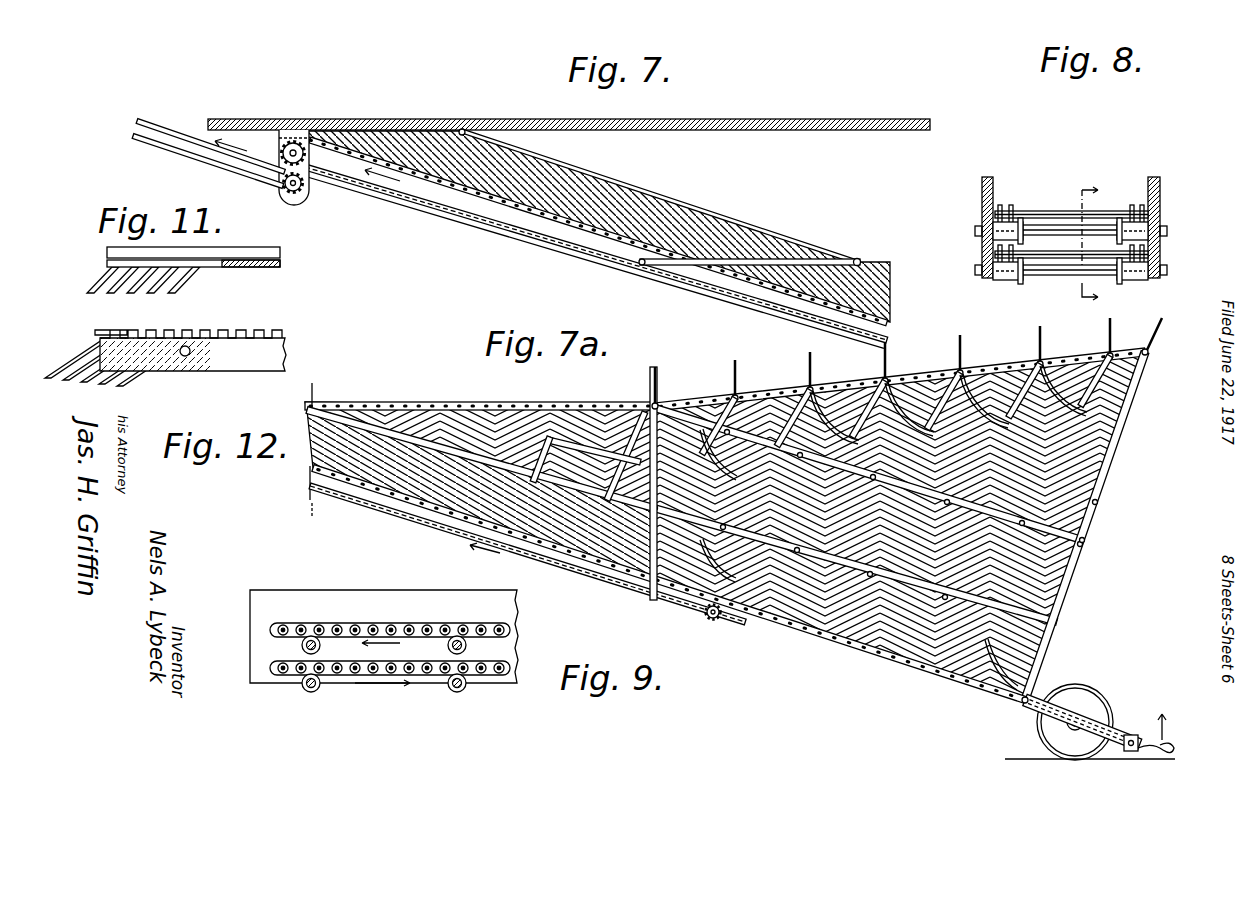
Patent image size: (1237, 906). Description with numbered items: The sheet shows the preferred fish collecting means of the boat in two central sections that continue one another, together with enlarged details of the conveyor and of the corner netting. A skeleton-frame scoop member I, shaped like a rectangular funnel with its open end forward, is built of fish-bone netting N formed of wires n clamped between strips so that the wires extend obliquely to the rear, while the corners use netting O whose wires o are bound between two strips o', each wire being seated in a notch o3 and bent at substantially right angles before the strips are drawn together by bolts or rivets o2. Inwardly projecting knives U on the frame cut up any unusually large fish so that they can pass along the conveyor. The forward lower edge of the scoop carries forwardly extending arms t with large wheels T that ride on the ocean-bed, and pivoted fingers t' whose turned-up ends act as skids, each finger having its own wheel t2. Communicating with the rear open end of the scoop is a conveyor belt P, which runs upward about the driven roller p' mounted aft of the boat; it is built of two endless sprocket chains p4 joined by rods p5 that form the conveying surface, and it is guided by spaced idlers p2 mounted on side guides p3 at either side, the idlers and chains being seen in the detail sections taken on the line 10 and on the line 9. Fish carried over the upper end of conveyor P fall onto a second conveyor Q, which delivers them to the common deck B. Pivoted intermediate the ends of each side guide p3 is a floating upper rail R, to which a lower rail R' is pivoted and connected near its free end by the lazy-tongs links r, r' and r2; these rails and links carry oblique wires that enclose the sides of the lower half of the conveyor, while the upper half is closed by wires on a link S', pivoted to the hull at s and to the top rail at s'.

In FIG. 7, the common deck B is at (760, 124).
In FIG. 7, the second conveyor Q is at (145, 143).
In FIG. 7, the directional roller p' is at (294, 143).
In FIG. 7, the pivot of link S to hull s is at (658, 175).
In FIG. 7, the pivot of link S to top rail s' is at (877, 249).
In FIG. 7, the link S' is at (595, 226).
In FIG. 7, the side guides p3 is at (505, 226).
In FIG. 8, the side guides p3 is at (984, 200).
In FIG. 9, the side guides p3 is at (290, 596).
In FIG. 7, the upper rail R is at (749, 240).
In FIG. 7A, the upper rail R is at (725, 380).
In FIG. 7A, the lower rail R' is at (682, 501).
In FIG. 7A, the lazy-tongs link r is at (630, 483).
In FIG. 7A, the lazy-tongs link r' is at (594, 418).
In FIG. 7A, the lazy-tongs link r2 is at (531, 446).
In FIG. 7A, the inwardly projecting knives U is at (704, 426).
In FIG. 7A, the corner netting O is at (1098, 418).
In FIG. 11, the corner netting O is at (300, 259).
In FIG. 7A, the scoop member I is at (1112, 438).
In FIG. 7A, the netting N is at (1094, 520).
In FIG. 7A, the wires n is at (1052, 514).
In FIG. 7A, the section line 10 is at (592, 565).
In FIG. 7A, the conveyor belt P is at (716, 620).
In FIG. 7A, the large wheels or rollers T is at (1083, 694).
In FIG. 7A, the forwardly extending arms t is at (1072, 722).
In FIG. 7A, the finger wheel t2 is at (1129, 734).
In FIG. 7A, the pivoted fingers t' is at (1156, 715).
In FIG. 8, the rods p5 is at (1048, 212).
In FIG. 8, the spaced idlers p2 is at (1007, 279).
In FIG. 9, the spaced idlers p2 is at (302, 688).
In FIG. 9, the endless sprocket chains p4 is at (272, 630).
In FIG. 8, the section line 9 is at (1085, 245).
In FIG. 11, the wires o is at (143, 289).
In FIG. 12, the wires o is at (112, 371).
In FIG. 11, the strips o' is at (279, 258).
In FIG. 12, the strips o' is at (193, 337).
In FIG. 11, the bolts or rivets o2 is at (180, 247).
In FIG. 12, the bolts or rivets o2 is at (190, 355).
In FIG. 11, the notch o3 is at (246, 267).